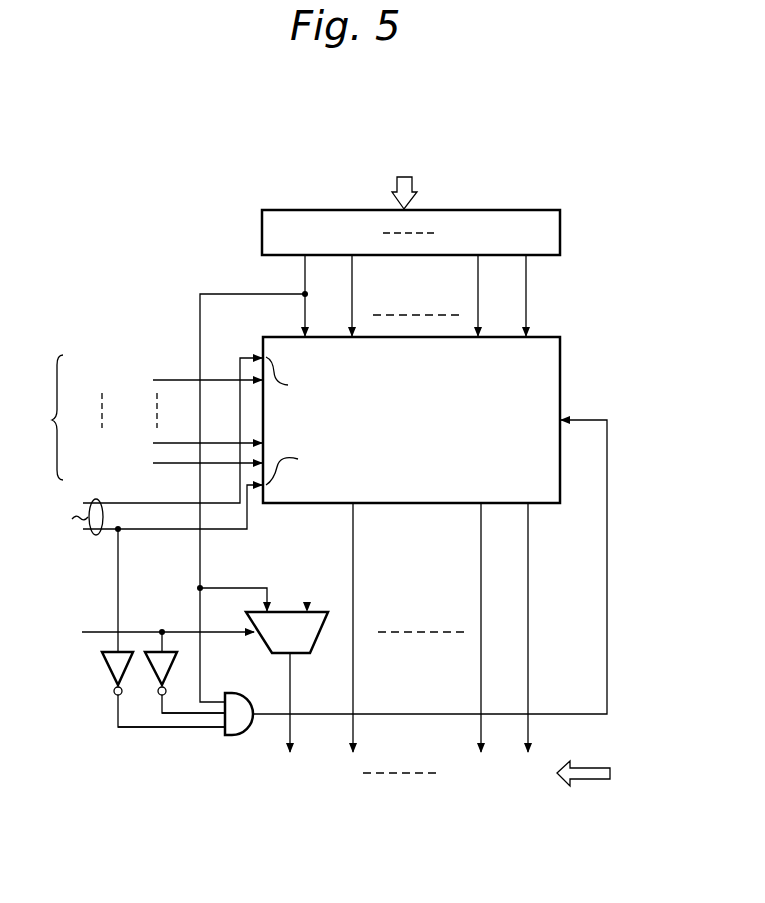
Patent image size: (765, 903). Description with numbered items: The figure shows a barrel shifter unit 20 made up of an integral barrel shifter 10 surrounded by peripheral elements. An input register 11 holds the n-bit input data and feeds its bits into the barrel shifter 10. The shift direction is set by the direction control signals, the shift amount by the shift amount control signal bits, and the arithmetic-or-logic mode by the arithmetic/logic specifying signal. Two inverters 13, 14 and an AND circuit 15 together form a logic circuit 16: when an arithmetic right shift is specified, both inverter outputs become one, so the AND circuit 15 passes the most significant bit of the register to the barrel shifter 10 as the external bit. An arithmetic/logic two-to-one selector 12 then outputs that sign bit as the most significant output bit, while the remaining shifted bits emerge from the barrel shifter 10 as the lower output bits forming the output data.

The barrel shifter unit 20 is at (137, 232).
The input register 11 is at (561, 231).
The barrel shifter 10 is at (558, 338).
The arithmetic/logic 2-1 selector 12 is at (303, 655).
The inverter 13 is at (111, 673).
The inverter 14 is at (174, 664).
The AND circuit 15 is at (240, 695).
The logic circuit 16 is at (181, 740).